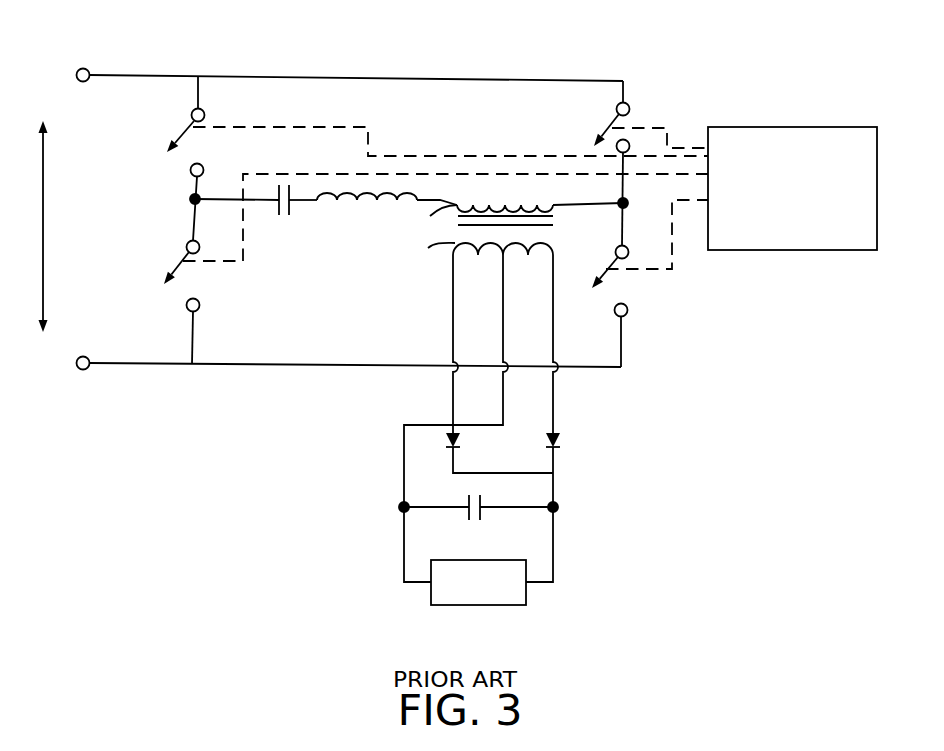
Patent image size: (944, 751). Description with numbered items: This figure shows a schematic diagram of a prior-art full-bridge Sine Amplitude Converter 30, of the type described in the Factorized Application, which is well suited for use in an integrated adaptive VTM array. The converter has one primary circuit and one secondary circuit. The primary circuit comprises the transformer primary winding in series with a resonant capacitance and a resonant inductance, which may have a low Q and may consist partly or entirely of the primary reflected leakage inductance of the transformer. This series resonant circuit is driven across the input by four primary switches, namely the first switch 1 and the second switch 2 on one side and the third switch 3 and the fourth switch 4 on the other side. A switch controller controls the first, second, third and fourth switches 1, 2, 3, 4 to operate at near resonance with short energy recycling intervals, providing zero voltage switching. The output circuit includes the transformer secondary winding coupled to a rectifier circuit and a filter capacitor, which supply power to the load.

The prior art resonant converter with switch controller 30 is at (702, 91).
The primary switch SW1 1 is at (597, 117).
The primary switch SW2 2 is at (595, 303).
The primary switch SW3 3 is at (168, 126).
The primary switch SW4 4 is at (161, 300).